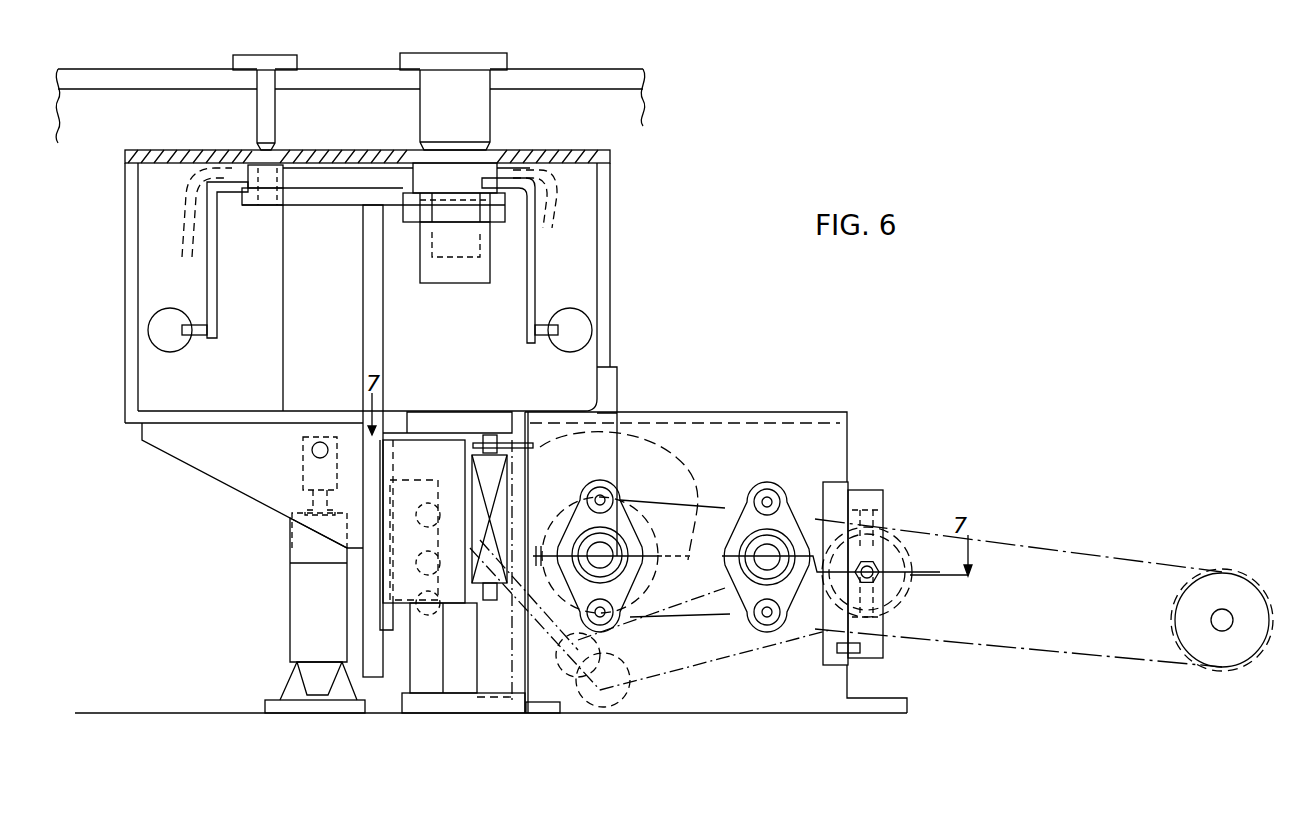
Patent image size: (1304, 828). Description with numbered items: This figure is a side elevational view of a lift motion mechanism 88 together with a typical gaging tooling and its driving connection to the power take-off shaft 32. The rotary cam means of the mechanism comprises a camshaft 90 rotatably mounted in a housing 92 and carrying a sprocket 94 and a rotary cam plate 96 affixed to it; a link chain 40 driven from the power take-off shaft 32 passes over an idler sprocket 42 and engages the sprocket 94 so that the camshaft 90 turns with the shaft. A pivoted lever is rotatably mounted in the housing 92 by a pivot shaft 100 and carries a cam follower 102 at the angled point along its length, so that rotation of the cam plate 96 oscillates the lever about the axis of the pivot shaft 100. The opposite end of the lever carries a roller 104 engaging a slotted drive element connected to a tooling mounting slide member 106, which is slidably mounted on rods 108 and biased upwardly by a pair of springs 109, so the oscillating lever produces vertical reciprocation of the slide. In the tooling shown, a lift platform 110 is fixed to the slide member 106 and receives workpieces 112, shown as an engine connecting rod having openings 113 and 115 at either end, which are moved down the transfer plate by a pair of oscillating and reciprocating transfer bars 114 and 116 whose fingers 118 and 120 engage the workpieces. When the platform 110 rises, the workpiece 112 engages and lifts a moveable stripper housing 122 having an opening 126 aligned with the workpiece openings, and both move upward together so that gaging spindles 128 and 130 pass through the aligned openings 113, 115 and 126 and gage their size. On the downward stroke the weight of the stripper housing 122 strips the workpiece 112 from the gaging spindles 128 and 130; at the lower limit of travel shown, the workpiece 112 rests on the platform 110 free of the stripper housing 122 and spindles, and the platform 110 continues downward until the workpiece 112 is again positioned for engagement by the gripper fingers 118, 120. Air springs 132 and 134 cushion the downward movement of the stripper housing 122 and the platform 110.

The power take-off shaft 32 is at (1211, 620).
The link chain 40 is at (1000, 513).
The idler sprocket 42 is at (912, 549).
The lift motion mechanism 88 is at (700, 412).
The camshaft 90 is at (736, 553).
The housing 92 is at (822, 413).
The sprocket 94 is at (554, 512).
The rotary cam plate 96 is at (685, 458).
The pivot shaft 100 is at (772, 528).
The cam follower 102 is at (572, 668).
The roller 104 is at (413, 468).
The tooling mounting slide member 106 is at (437, 404).
The rods 108 is at (408, 694).
The springs 109 is at (537, 450).
The lift platform 110 is at (372, 324).
The workpiece 112 is at (328, 178).
The opening 113 is at (265, 196).
The transfer bar 114 is at (176, 318).
The opening 115 is at (422, 176).
The transfer bar 116 is at (575, 318).
The finger 118 is at (221, 330).
The finger 120 is at (527, 307).
The moveable stripper housing 122 is at (128, 260).
The opening 126 is at (490, 163).
The gaging spindle 128 is at (270, 112).
The gaging spindle 130 is at (470, 108).
The air spring 132 is at (298, 608).
The air spring 134 is at (427, 272).